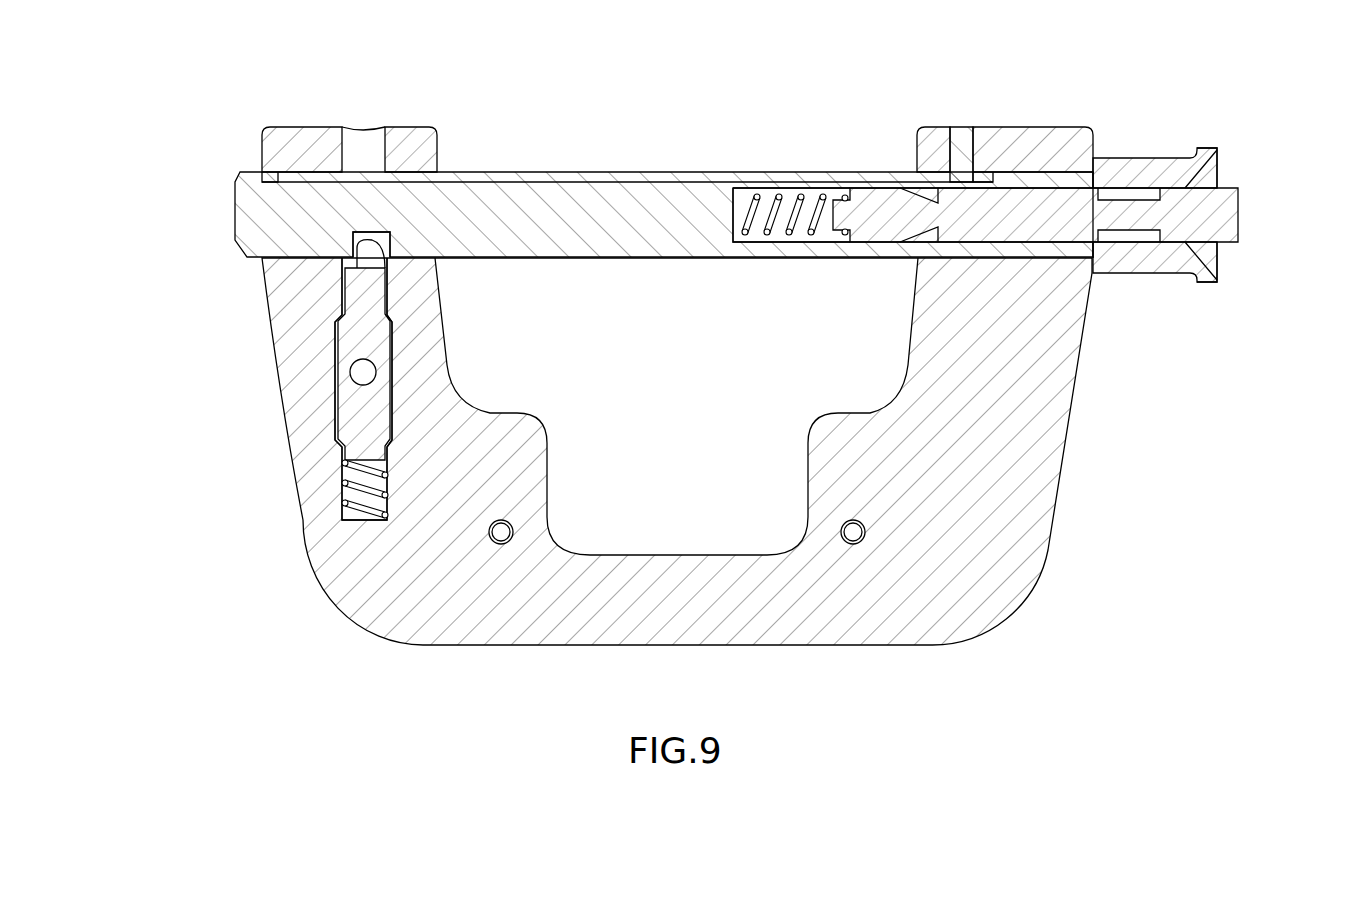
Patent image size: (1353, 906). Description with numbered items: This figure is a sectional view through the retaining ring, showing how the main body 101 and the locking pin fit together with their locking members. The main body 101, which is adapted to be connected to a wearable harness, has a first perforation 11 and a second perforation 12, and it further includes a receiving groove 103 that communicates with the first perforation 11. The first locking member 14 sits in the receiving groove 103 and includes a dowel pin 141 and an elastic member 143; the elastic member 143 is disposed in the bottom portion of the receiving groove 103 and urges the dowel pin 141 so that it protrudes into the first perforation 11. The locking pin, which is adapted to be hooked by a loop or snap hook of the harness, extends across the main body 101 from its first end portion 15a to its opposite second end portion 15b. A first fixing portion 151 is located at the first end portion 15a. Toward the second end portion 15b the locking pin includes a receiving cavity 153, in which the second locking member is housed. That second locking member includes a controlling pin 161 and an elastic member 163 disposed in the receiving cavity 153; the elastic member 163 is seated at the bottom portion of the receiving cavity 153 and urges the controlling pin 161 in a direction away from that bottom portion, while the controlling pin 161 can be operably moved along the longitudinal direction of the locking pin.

The first perforation 11 is at (441, 171).
The second perforation 12 is at (917, 173).
The first locking member 14 is at (251, 379).
The first end portion 15a is at (250, 175).
The second end portion 15b is at (1135, 167).
The main body 101 is at (1047, 410).
The receiving groove 103 is at (335, 333).
The dowel pin 141 is at (350, 390).
The elastic member 143 is at (345, 487).
The first fixing portion 151 is at (370, 222).
The receiving cavity 153 is at (1218, 173).
The controlling pin 161 is at (1227, 225).
The elastic member 163 is at (797, 207).